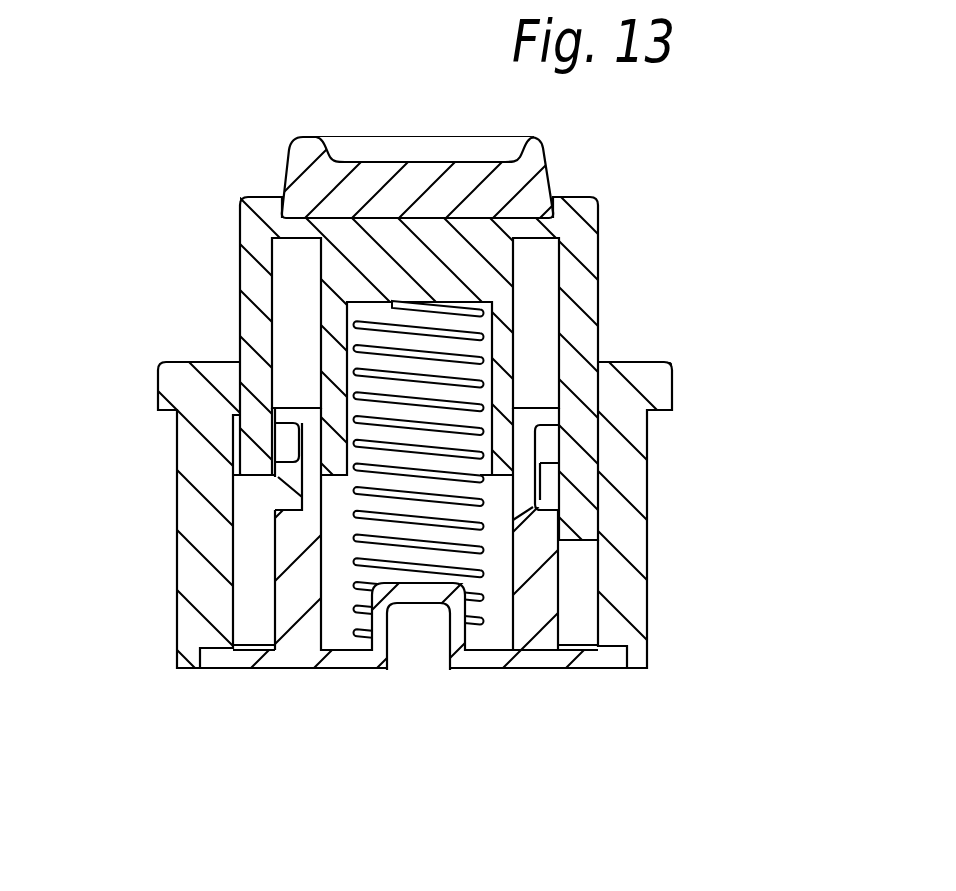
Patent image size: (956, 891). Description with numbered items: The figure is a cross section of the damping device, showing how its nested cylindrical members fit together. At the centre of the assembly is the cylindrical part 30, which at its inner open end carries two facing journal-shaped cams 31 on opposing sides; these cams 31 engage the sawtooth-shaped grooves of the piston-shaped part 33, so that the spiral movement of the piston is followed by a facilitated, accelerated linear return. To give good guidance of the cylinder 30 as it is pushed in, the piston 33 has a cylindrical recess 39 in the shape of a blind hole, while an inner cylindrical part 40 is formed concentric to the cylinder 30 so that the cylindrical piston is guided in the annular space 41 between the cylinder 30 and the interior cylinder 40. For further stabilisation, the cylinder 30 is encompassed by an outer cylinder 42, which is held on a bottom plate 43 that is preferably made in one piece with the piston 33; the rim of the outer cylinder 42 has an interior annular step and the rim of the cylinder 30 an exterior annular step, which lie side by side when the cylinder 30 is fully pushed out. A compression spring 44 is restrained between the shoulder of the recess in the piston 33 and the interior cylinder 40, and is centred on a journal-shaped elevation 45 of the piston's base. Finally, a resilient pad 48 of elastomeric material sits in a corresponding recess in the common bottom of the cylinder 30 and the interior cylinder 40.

The resilient pad 48 is at (539, 176).
The cylindrical part 30 is at (580, 283).
The inner cylindrical part 40 is at (327, 327).
The annular space 41 is at (538, 345).
The journal-shaped cams 31 is at (280, 443).
The outer cylinder 42 is at (190, 575).
The cylindrical recess 39 is at (322, 541).
The piston-shaped part 33 is at (540, 577).
The bottom plate 43 is at (505, 652).
The journal-shaped elevation 45 is at (427, 593).
The compression spring 44 is at (466, 522).